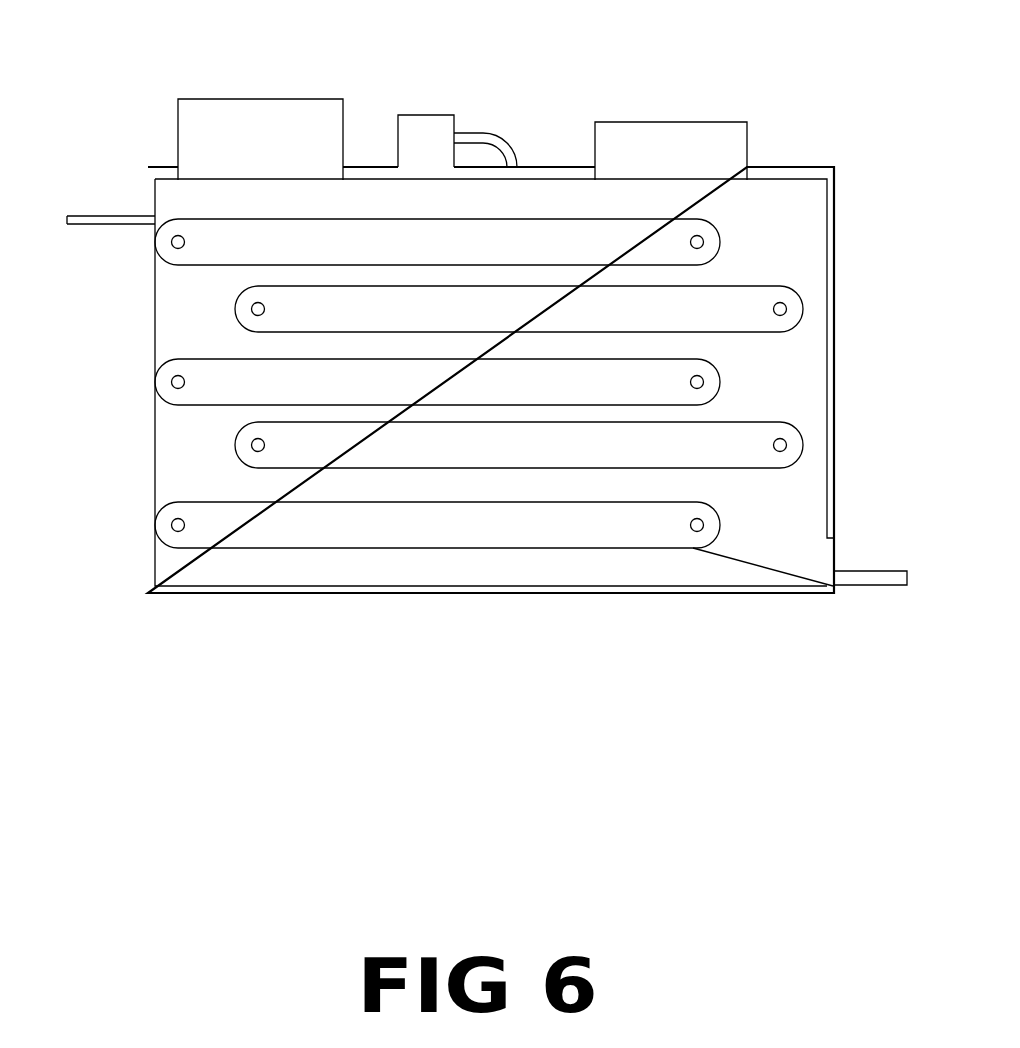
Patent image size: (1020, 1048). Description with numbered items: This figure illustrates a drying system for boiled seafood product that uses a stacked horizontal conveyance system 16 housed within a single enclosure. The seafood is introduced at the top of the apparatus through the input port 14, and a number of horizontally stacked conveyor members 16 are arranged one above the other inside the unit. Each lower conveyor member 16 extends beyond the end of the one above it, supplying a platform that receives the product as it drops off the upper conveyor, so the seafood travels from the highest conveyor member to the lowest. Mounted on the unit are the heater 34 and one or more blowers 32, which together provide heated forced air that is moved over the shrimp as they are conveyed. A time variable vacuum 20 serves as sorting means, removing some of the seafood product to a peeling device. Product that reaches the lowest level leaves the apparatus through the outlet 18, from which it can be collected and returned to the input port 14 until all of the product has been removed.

The input port 14 is at (148, 197).
The horizontally stacked conveyor members 16 is at (720, 242).
The outlet 18 is at (835, 562).
The vacuum 20 is at (420, 115).
The blower 32 is at (672, 123).
The heater 34 is at (260, 100).